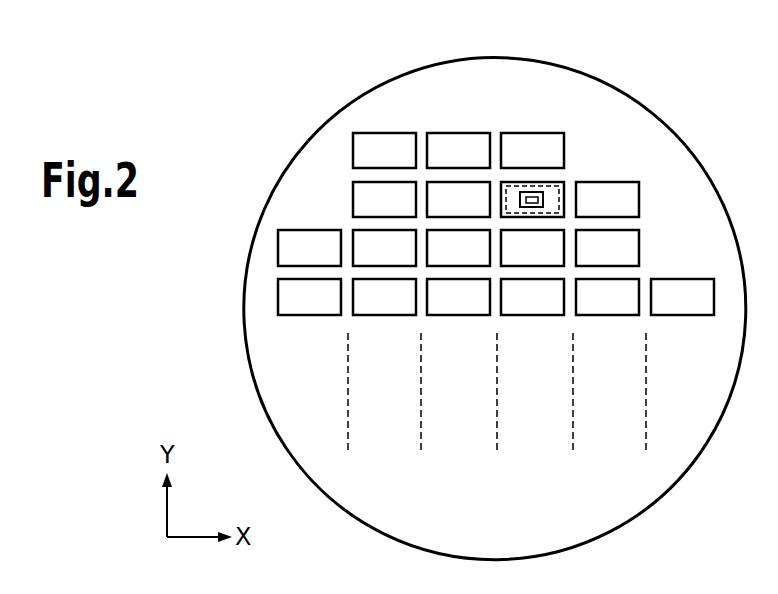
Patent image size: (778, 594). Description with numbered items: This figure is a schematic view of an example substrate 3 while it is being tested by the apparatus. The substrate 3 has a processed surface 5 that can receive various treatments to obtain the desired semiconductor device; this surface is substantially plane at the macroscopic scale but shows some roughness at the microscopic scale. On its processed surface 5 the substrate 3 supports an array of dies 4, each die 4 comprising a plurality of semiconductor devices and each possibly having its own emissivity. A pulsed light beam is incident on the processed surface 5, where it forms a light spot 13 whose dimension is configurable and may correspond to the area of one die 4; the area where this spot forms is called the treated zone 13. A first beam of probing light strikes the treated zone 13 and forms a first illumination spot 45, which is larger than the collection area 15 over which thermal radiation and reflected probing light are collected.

The substrate 3 is at (215, 328).
The die 4 is at (455, 147).
The processed surface 5 is at (293, 187).
The light spot 13 is at (522, 192).
The collection area 15 is at (536, 197).
The first illumination spot 45 is at (528, 207).